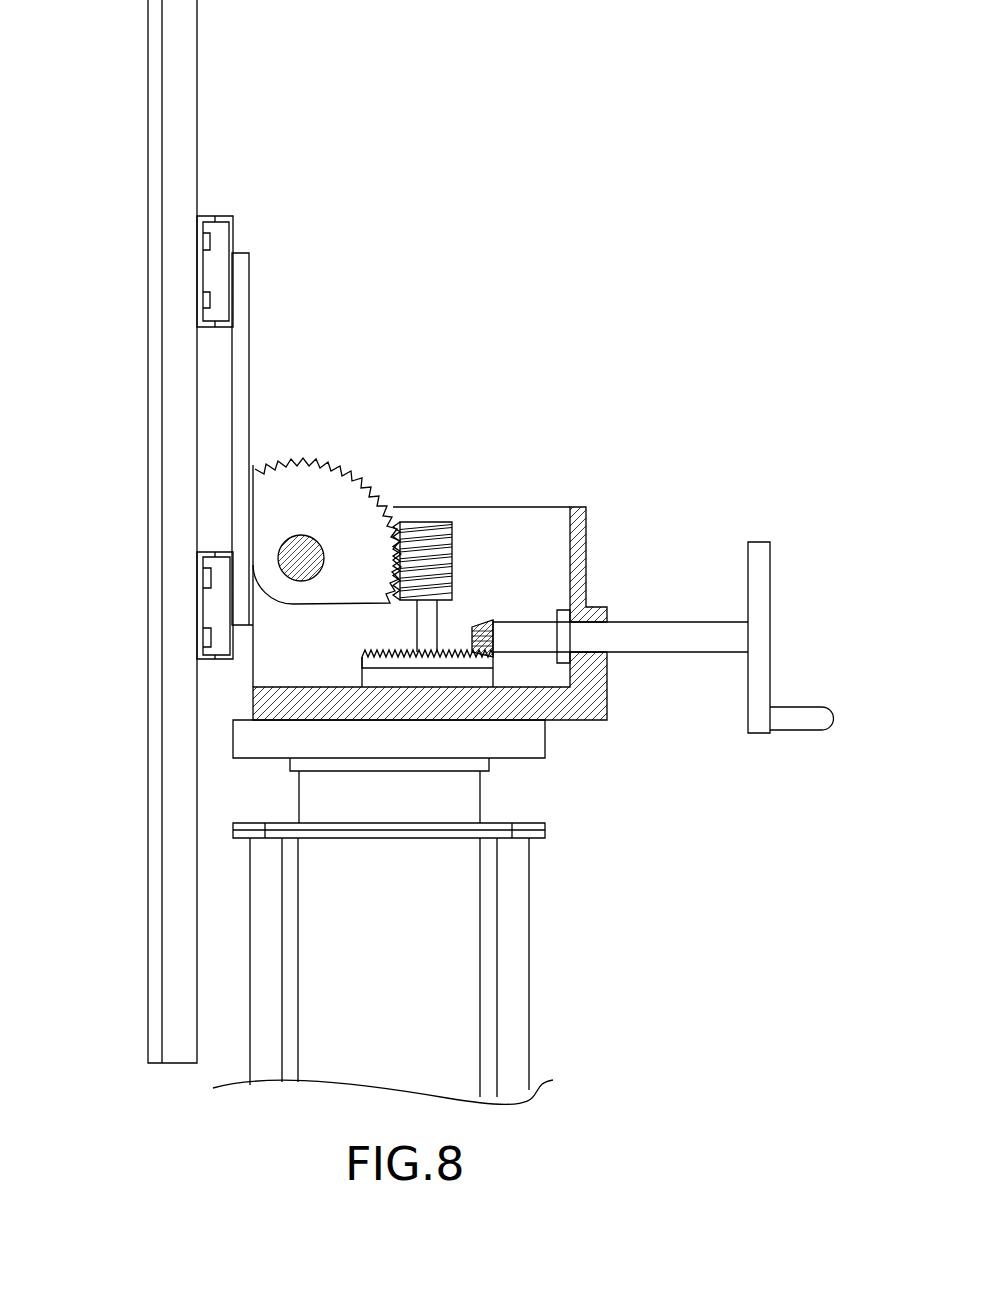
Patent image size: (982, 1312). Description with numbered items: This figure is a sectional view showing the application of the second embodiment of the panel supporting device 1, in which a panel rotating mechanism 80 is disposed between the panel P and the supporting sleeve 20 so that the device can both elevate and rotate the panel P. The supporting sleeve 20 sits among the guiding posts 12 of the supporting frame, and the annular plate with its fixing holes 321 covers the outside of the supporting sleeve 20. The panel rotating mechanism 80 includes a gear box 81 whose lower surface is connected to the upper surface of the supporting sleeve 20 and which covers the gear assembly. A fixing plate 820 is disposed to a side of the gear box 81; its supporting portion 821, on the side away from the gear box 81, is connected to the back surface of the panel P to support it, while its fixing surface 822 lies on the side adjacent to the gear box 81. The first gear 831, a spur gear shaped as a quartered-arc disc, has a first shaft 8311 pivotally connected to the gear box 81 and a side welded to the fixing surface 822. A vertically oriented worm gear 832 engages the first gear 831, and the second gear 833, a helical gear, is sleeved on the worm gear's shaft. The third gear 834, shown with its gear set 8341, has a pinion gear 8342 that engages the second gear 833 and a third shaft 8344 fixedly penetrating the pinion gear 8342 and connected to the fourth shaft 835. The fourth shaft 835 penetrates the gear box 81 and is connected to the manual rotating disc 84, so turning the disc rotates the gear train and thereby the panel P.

The panel P is at (182, 128).
The panel supporting device 1 is at (430, 631).
The guiding posts 12 is at (515, 913).
The supporting sleeve 20 is at (452, 968).
The panel rotating mechanism 80 is at (445, 588).
The gear box 81 is at (582, 518).
The manual rotating disc 84 is at (762, 585).
The bracket assembly 820 is at (252, 208).
The supporting portion 821 is at (230, 233).
The fixing surface 822 is at (239, 363).
The first gear 831 is at (228, 483).
The first shaft 8311 is at (295, 547).
The worm gear 832 is at (420, 540).
The fixing holes 321 is at (422, 628).
The second gear 833 is at (452, 650).
The third gear 834 is at (610, 616).
The transmission gear set 8341 is at (610, 692).
The pinion gear 8342 is at (497, 635).
The third shaft 8344 is at (533, 635).
The fourth shaft 835 is at (693, 642).